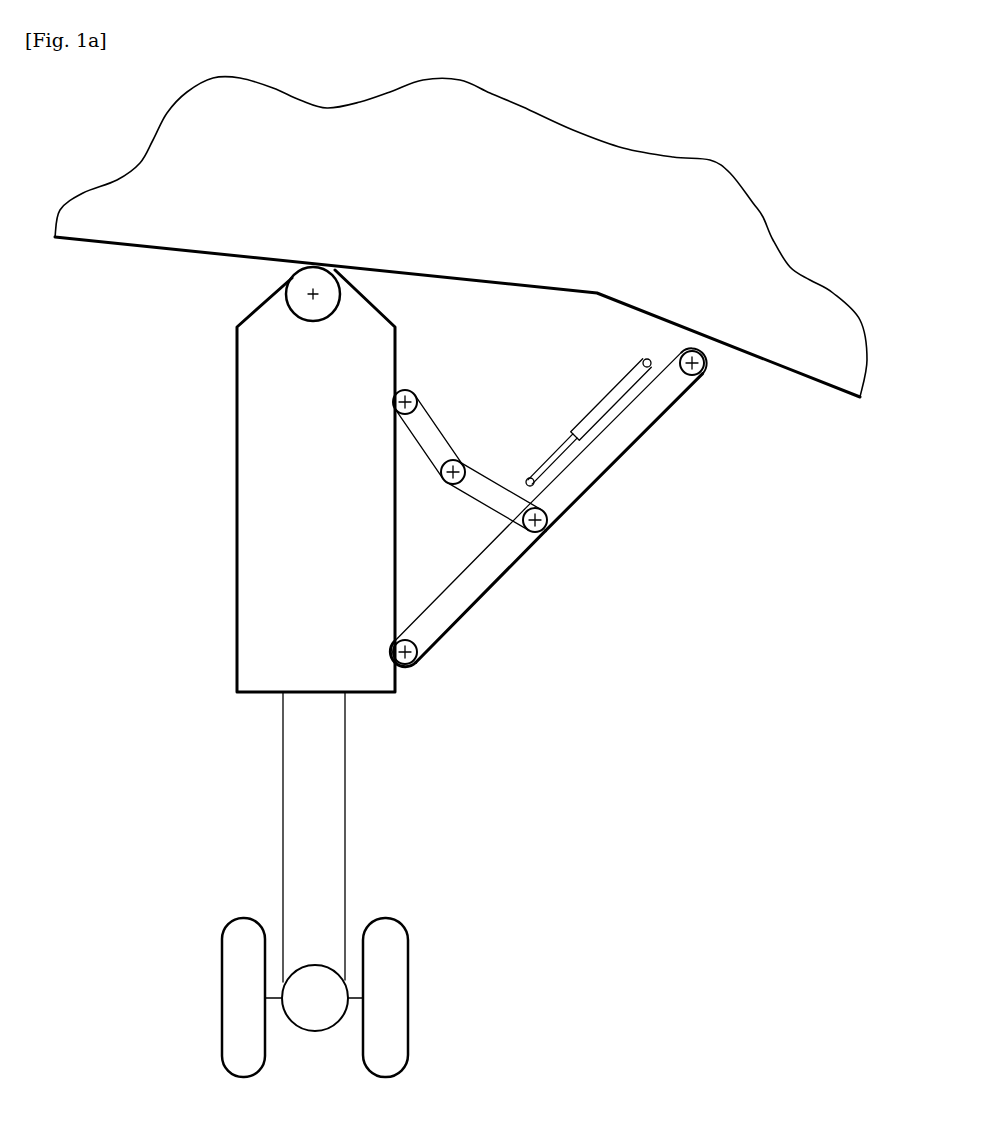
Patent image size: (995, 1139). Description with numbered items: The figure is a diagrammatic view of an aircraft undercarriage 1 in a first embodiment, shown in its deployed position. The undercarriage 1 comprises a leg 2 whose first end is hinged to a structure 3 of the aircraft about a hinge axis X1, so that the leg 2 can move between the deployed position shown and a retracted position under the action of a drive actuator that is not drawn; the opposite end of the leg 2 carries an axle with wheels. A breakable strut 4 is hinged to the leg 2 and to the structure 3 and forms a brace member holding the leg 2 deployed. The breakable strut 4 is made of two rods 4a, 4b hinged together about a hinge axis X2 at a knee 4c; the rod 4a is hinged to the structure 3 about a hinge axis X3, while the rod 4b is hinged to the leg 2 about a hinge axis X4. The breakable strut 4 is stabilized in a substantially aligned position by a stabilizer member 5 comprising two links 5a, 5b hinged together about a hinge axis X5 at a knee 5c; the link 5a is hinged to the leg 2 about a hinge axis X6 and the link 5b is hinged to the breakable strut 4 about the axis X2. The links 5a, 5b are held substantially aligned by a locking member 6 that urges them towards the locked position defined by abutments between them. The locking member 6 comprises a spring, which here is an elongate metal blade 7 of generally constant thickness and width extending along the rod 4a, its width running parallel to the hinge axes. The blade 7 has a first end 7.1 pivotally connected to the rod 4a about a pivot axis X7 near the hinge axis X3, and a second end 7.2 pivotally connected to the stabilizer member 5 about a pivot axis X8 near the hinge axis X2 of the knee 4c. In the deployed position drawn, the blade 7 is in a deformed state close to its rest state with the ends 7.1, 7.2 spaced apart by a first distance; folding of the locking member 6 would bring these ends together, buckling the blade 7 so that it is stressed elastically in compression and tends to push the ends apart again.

The aircraft undercarriage 1 is at (158, 738).
The leg 2 is at (262, 507).
The structure of an aircraft 3 is at (461, 236).
The breakable strut 4 is at (567, 507).
The rod 4a is at (600, 460).
The rod 4b is at (445, 617).
The knee 4c is at (540, 534).
The stabilizer member 5 is at (468, 476).
The link 5a is at (428, 427).
The link 5b is at (490, 487).
The knee 5c is at (460, 458).
The locking member 6 is at (578, 404).
The metal blade 7 is at (578, 404).
The first end 7.1 is at (640, 366).
The second end 7.2 is at (553, 452).
The hinge axis X1 is at (308, 293).
The hinge axis X2 is at (545, 525).
The hinge axis X3 is at (700, 373).
The hinge axis X4 is at (415, 662).
The hinge axis X5 is at (448, 483).
The hinge axis X6 is at (403, 390).
The pivot axis X7 is at (649, 358).
The pivot axis X8 is at (534, 486).